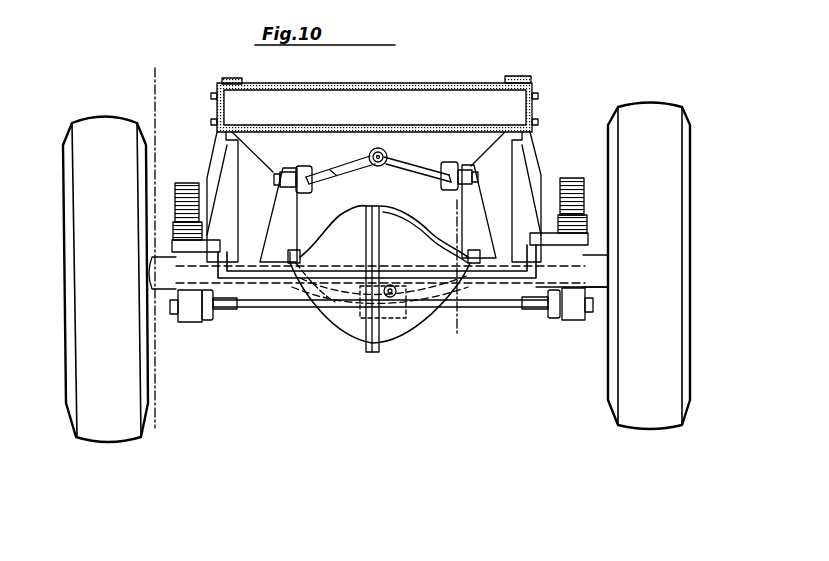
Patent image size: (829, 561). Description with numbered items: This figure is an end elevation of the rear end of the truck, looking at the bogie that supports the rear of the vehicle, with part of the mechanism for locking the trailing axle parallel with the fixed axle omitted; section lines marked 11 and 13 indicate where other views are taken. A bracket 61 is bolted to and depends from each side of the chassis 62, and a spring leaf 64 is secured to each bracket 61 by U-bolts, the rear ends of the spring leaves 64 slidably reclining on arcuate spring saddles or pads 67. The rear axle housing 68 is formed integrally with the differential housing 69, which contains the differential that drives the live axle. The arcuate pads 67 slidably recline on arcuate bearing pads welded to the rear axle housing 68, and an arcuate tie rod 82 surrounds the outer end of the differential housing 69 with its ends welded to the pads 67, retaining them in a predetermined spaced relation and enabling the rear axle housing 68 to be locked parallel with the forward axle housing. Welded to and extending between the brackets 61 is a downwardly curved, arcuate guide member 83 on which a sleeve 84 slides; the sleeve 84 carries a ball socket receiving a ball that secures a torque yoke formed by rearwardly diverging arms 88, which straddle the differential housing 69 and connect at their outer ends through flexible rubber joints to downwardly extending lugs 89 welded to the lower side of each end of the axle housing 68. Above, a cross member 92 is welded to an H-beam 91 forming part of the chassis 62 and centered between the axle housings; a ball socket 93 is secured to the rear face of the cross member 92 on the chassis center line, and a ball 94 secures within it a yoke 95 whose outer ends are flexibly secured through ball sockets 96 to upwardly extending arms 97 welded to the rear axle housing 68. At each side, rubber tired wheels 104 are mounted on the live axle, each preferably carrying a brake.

The section line 11- 11 is at (155, 68).
The section line 13- 13 is at (457, 200).
The bracket 61 is at (230, 170).
The chassis 62 is at (516, 80).
The spring leaf 64 is at (181, 189).
The arcuate spring saddle 67 is at (180, 247).
The axle housing 68 is at (606, 288).
The differential housing 69 is at (406, 250).
The arcuate tie rod 82 is at (325, 275).
The arcuate guide member 83 is at (303, 292).
The sleeve 84 is at (392, 318).
The rearwardly diverging arms 88 is at (270, 308).
The lug 89 is at (191, 322).
The H-beam 91 is at (387, 115).
The cross member 92 is at (285, 150).
The ball socket 93 is at (390, 158).
The ball 94 is at (371, 152).
The yoke 95 is at (338, 172).
The ball socket 96 is at (304, 166).
The upwardly extending arm 97 is at (290, 215).
The rubber tired wheel 104 is at (82, 392).